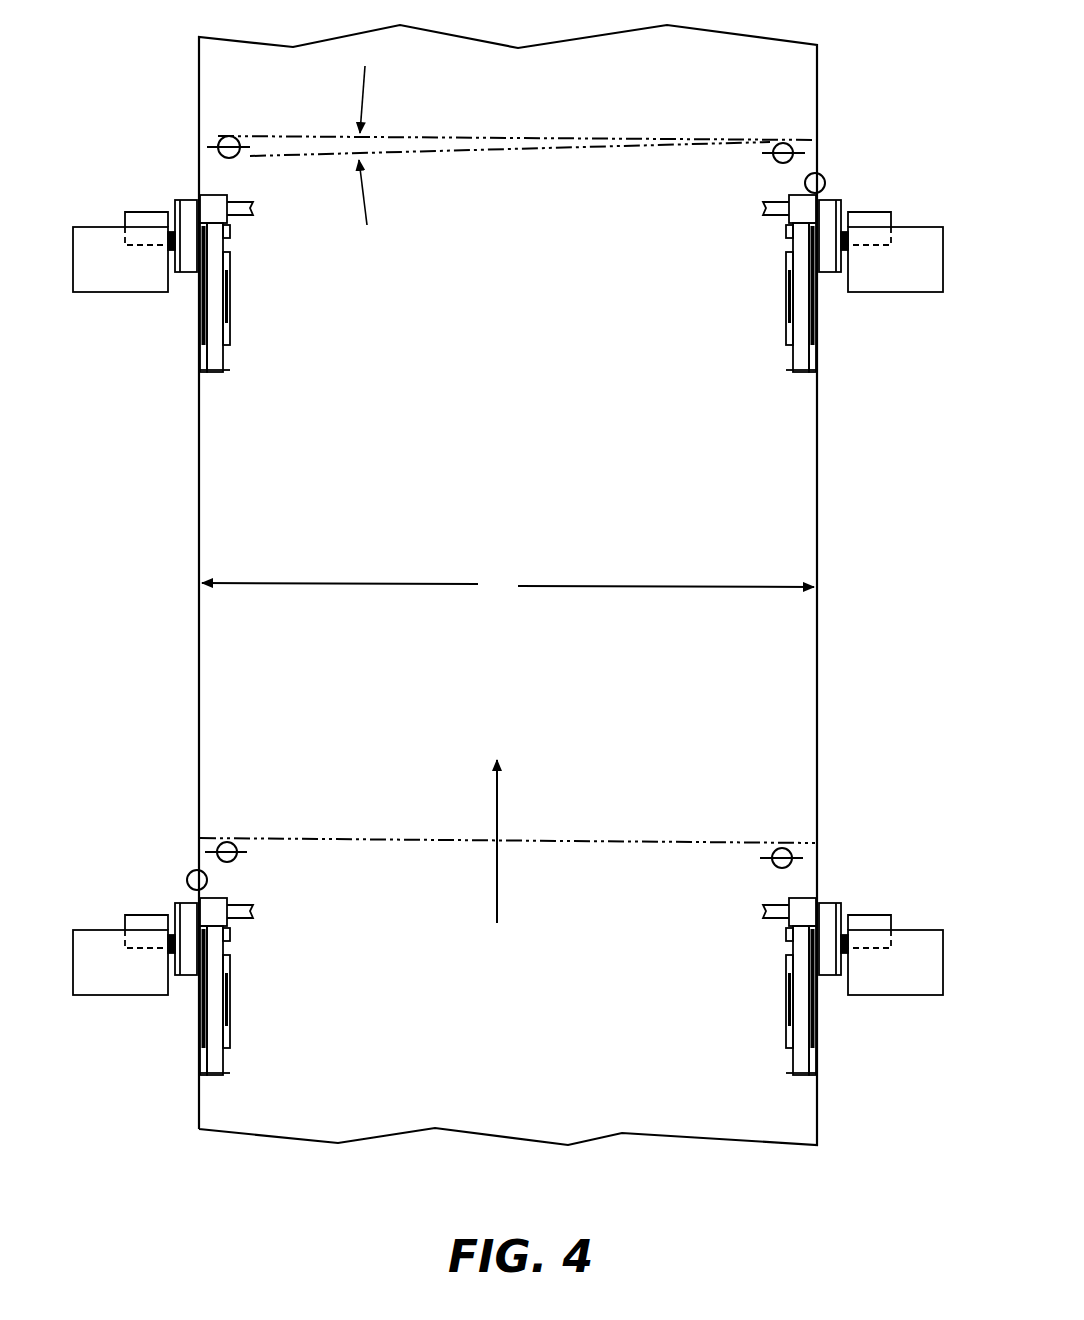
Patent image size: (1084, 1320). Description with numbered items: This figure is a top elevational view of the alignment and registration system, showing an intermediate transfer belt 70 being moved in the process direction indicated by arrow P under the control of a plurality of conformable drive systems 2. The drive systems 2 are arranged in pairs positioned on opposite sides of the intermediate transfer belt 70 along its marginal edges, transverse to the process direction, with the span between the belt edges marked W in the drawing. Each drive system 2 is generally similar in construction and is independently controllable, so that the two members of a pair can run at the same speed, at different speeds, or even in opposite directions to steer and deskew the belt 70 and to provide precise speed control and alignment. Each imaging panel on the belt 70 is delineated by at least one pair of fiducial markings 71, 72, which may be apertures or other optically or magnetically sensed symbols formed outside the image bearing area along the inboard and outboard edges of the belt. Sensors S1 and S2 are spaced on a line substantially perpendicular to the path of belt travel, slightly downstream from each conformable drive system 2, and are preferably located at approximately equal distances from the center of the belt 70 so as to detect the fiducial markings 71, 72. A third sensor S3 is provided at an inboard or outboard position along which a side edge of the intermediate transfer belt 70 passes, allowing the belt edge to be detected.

The conformable drive system 2 is at (153, 183).
The intermediate transfer belt 70 is at (793, 463).
The fiducial marking 71 is at (240, 153).
The fiducial marking 72 is at (767, 143).
The sensor S1 is at (229, 136).
The sensor S2 is at (785, 163).
The third sensor S3 is at (818, 173).
The web width W is at (508, 584).
The process direction arrow P is at (496, 858).